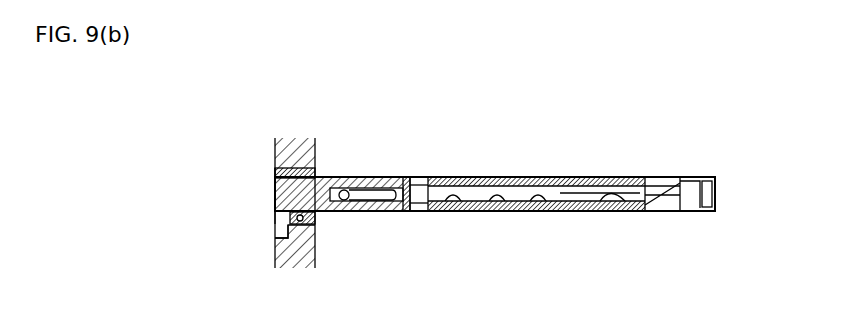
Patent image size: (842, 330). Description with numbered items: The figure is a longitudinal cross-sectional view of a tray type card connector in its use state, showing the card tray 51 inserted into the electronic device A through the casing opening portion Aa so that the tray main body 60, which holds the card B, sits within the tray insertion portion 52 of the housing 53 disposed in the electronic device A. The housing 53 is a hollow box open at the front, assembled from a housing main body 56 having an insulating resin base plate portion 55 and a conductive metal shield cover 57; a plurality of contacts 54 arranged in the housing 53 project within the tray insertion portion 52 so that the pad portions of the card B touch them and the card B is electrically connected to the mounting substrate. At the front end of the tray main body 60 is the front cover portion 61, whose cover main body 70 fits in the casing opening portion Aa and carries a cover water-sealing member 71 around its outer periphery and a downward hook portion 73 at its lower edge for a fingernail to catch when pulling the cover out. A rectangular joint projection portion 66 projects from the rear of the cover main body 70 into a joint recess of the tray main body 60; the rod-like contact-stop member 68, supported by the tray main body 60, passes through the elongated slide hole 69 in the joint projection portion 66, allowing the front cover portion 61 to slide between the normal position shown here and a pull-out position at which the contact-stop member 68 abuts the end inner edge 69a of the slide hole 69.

The electronic device A is at (292, 146).
The casing opening portion Aa is at (275, 185).
The card B is at (565, 178).
The card tray 51 is at (452, 177).
The tray insertion portion 52 is at (648, 203).
The housing 53 is at (700, 176).
The contacts 54 is at (468, 178).
The base plate portion 55 is at (555, 211).
The housing main body 56 is at (717, 190).
The shield cover 57 is at (642, 177).
The tray main body 60 is at (605, 178).
The front cover portion 61 is at (272, 202).
The joint projection portion 66 is at (380, 176).
The contact-stop member 68 is at (346, 200).
The slide hole 69 is at (368, 202).
The end inner edge 69a is at (398, 210).
The cover main body 70 is at (276, 217).
The cover water-sealing member 71 is at (315, 170).
The hook portion 73 is at (282, 250).